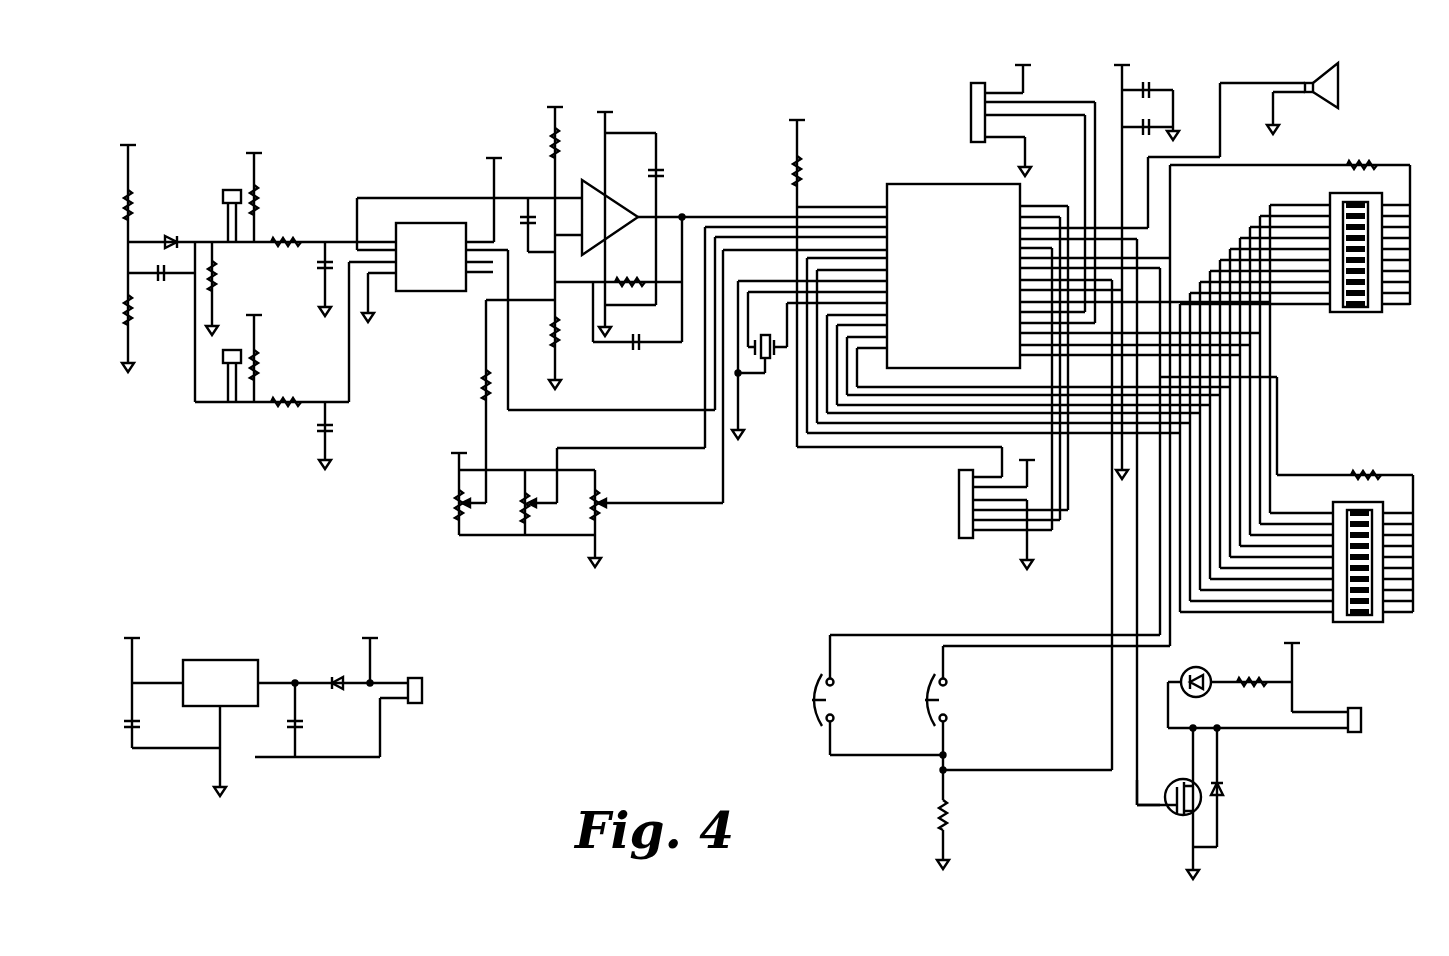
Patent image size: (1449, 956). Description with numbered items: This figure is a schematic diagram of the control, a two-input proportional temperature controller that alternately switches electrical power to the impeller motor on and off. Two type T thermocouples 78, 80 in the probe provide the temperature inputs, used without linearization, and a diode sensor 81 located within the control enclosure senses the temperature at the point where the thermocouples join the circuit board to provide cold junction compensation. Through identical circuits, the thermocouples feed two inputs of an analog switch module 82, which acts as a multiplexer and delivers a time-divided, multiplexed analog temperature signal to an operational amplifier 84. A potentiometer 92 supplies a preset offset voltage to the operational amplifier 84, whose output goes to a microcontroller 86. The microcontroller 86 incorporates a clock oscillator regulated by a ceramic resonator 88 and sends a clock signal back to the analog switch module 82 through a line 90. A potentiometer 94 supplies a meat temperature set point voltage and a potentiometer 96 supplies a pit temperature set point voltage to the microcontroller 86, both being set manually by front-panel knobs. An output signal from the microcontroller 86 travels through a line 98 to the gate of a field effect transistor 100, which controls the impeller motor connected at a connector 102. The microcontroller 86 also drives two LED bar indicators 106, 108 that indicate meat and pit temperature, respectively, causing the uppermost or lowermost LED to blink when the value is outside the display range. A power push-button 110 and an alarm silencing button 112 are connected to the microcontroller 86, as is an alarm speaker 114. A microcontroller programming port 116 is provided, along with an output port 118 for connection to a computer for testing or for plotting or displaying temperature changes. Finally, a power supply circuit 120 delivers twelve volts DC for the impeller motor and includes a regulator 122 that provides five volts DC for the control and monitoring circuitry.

The thermocouple 78 is at (232, 190).
The thermocouple 80 is at (223, 358).
The diode sensor 81 is at (172, 236).
The analog switch module 82 is at (425, 291).
The operational amplifier 84 is at (615, 195).
The microcontroller 86 is at (905, 184).
The ceramic resonator 88 is at (768, 360).
The line 90 is at (684, 410).
The potentiometer 92 is at (455, 508).
The potentiometer 94 is at (520, 497).
The potentiometer 96 is at (600, 495).
The line 98 is at (1130, 805).
The field effect transistor 100 is at (1180, 820).
The connector 102 is at (1355, 735).
The LED bar indicator 106 is at (1360, 622).
The LED bar indicator 108 is at (1355, 312).
The power push-button 110 is at (818, 692).
The alarm silencing button 112 is at (930, 692).
The alarm speaker 114 is at (1320, 70).
The microcontroller programming port 116 is at (959, 500).
The output port 118 is at (971, 95).
The power supply circuit 120 is at (273, 720).
The regulator 122 is at (243, 660).